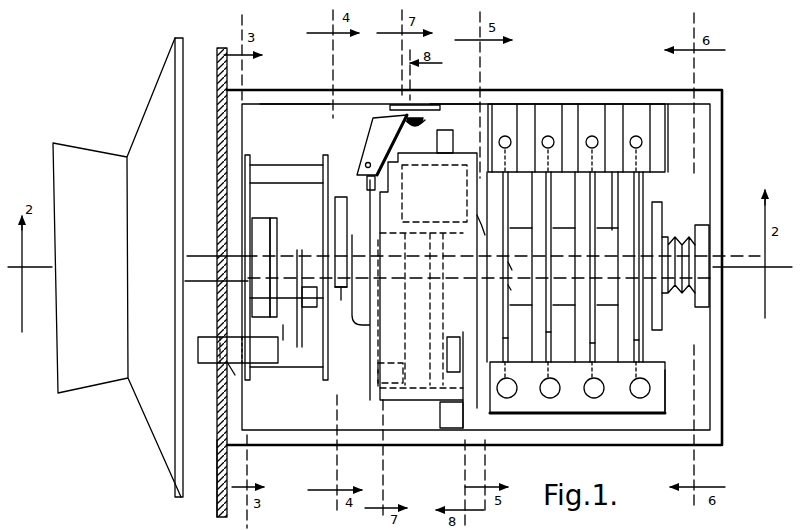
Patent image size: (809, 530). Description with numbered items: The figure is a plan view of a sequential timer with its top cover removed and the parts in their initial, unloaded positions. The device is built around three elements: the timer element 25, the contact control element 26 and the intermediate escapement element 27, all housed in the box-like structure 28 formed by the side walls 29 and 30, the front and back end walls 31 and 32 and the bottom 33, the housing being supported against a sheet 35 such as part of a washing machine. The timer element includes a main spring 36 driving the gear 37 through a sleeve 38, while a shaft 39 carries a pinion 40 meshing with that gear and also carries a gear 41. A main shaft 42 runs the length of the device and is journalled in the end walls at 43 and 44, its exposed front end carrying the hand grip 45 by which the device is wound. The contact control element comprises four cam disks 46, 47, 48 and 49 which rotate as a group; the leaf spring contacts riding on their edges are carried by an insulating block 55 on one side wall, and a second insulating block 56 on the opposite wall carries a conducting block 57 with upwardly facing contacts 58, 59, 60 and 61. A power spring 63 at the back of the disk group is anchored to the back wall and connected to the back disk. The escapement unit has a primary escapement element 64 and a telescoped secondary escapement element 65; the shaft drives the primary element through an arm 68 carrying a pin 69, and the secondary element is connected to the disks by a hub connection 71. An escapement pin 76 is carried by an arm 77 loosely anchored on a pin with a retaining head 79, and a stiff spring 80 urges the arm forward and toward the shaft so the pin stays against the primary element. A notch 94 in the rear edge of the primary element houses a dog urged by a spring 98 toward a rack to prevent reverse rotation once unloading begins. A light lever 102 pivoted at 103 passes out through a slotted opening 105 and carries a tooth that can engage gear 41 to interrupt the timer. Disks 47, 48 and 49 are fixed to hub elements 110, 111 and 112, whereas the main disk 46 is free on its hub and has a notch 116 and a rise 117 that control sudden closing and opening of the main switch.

The timer element 25 is at (290, 136).
The contact control element 26 is at (612, 186).
The intermediate escapement element 27 is at (455, 119).
The box-like structure 28 is at (528, 86).
The side wall 29 is at (568, 103).
The side wall 30 is at (421, 442).
The front end wall 31 is at (235, 418).
The back end wall 32 is at (717, 360).
The bottom 33 is at (675, 150).
The sheet 35 is at (222, 460).
The main spring 36 is at (263, 215).
The gear 37 is at (307, 190).
The sleeve 38 is at (284, 256).
The shaft 39 is at (284, 345).
The pinion 40 is at (318, 302).
The gear 41 is at (298, 350).
The main shaft 42 is at (189, 255).
The journal 43 is at (210, 257).
The journal 44 is at (712, 252).
The hand grip 45 is at (85, 172).
The main contact disk 46 is at (506, 214).
The cam disk 47 is at (550, 218).
The cam disk 48 is at (596, 220).
The cam disk 49 is at (643, 192).
The insulating block 55 is at (656, 105).
The insulating block 56 is at (655, 398).
The conducting block 57 is at (670, 375).
The stationary contact 58 is at (507, 399).
The stationary contact 59 is at (550, 399).
The stationary contact 60 is at (594, 399).
The stationary contact 61 is at (640, 399).
The power spring 63 is at (678, 236).
The primary escapement element 64 is at (373, 398).
The secondary escapement element 65 is at (462, 415).
The arm 68 is at (340, 298).
The pin 69 is at (357, 198).
The hub connection 71 is at (477, 218).
The escapement pin 76 is at (365, 181).
The arm 77 is at (375, 136).
The head 79 is at (434, 143).
The spring 80 is at (408, 117).
The notch 94 is at (447, 354).
The spring 98 is at (450, 342).
The lever 102 is at (238, 350).
The pivot point 103 is at (505, 339).
The slotted opening 105 is at (227, 377).
The hub element 110 is at (546, 333).
The hub element 111 is at (592, 343).
The hub element 112 is at (650, 340).
The notch 116 is at (522, 291).
The rise or dwell 117 is at (509, 262).